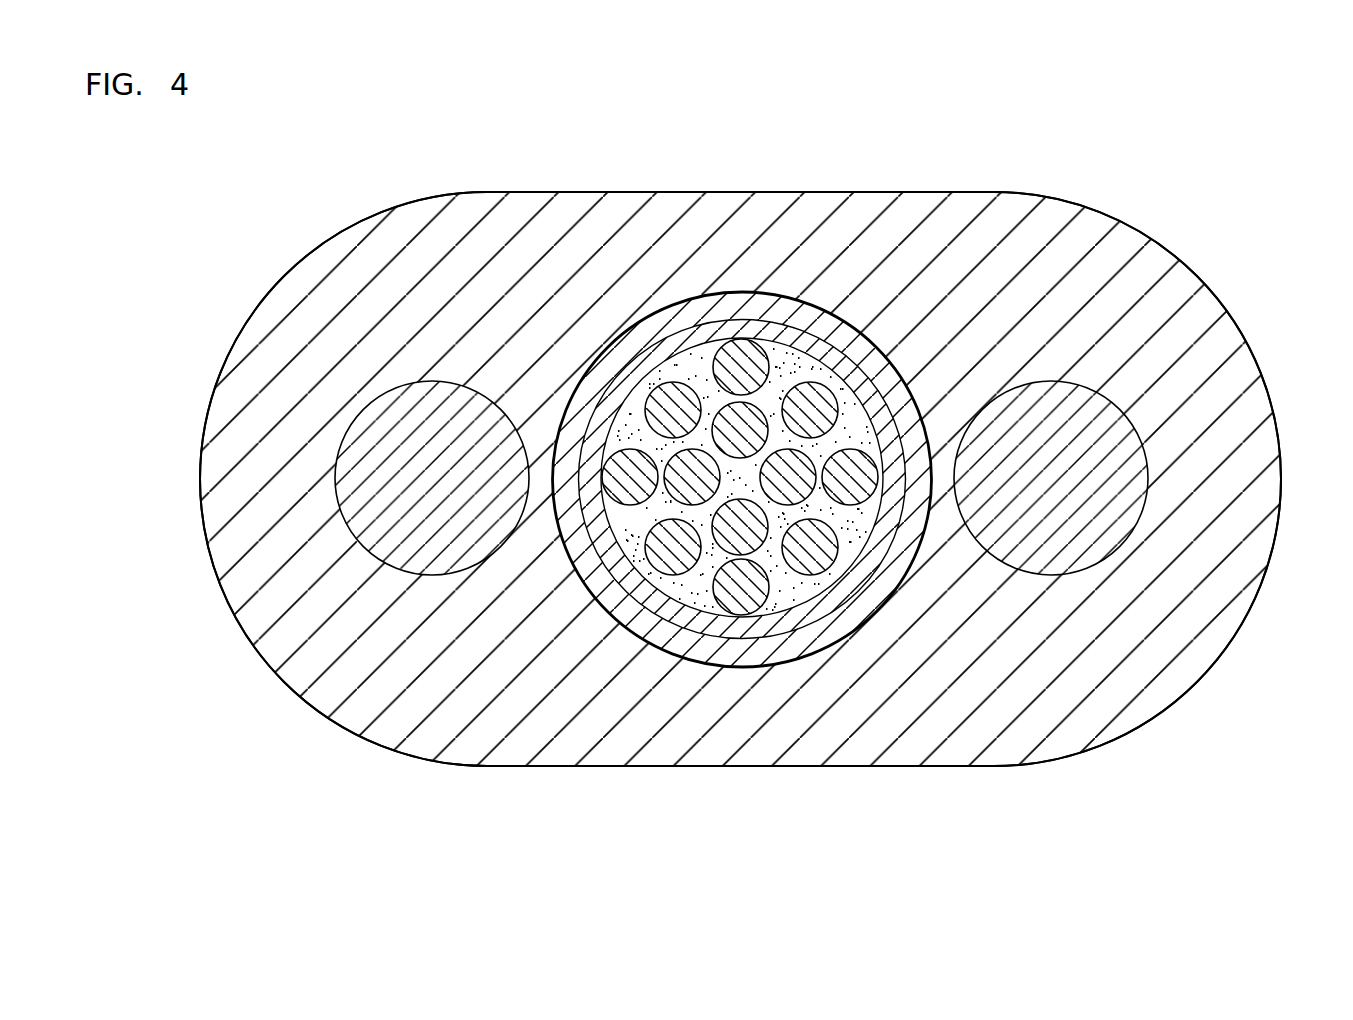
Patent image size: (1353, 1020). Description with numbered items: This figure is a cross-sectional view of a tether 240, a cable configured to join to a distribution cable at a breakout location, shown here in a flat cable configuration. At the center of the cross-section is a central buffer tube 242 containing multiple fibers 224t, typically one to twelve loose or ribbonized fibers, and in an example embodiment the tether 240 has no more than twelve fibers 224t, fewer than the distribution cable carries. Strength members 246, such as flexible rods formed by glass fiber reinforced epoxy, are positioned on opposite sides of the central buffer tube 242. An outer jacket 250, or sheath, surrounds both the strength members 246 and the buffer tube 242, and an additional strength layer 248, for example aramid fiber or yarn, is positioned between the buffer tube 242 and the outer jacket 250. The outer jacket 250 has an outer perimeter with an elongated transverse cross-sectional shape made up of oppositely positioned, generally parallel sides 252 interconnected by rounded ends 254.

The tether 240 is at (729, 473).
The central buffer tube 242 is at (753, 627).
The strength members 246 is at (385, 542).
The additional strength layer 248 is at (753, 310).
The outer jacket 250 is at (1065, 693).
The generally parallel sides 252 is at (628, 192).
The rounded ends 254 is at (200, 517).
The fibers 224t is at (818, 393).